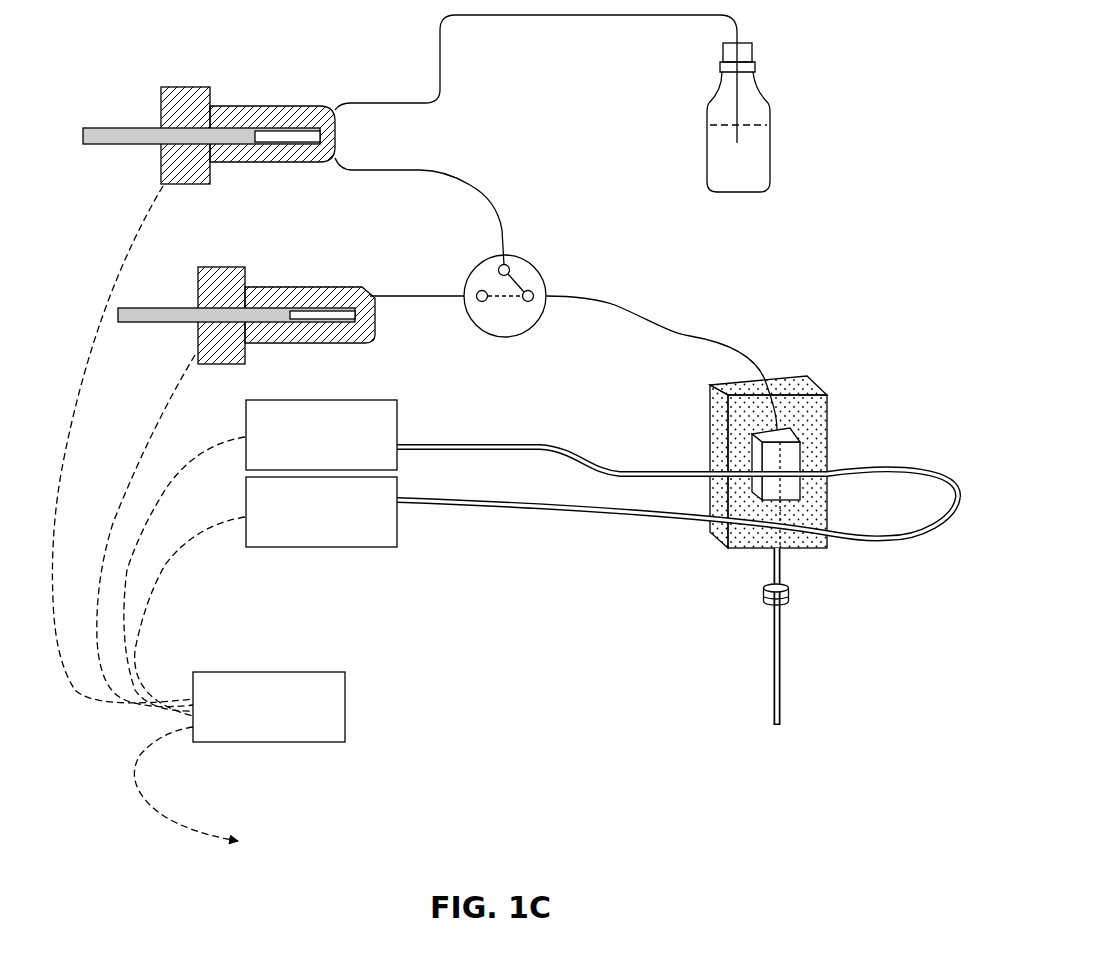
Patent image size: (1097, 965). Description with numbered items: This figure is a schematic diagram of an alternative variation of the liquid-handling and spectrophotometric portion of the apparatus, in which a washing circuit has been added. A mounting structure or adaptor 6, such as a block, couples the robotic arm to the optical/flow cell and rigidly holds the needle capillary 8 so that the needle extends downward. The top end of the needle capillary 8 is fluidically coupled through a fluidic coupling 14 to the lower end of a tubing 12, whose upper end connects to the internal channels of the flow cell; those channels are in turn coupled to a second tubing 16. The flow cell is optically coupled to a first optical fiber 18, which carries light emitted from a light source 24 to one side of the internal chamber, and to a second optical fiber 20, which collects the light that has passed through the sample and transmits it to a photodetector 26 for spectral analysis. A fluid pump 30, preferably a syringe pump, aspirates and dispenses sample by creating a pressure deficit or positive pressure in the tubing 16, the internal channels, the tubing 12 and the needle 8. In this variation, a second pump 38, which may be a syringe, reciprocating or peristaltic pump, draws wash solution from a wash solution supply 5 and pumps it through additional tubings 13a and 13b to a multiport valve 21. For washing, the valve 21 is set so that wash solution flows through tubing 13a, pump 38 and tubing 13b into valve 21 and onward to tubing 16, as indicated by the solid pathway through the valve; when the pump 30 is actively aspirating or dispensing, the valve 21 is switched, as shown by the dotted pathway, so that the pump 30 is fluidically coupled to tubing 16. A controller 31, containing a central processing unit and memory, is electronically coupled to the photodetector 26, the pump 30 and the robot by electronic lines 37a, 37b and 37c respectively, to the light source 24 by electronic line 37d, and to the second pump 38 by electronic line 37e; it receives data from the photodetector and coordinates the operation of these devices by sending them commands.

The wash solution supply 5 is at (768, 57).
The mounting structure or adaptor 6 is at (840, 390).
The needle capillary 8 is at (782, 673).
The tubing 12 is at (790, 557).
The tubing 13a is at (598, 18).
The tubing 13b is at (490, 198).
The fluidic coupling 14 is at (763, 597).
The second tubing 16 is at (617, 300).
The first optical fiber 18 is at (535, 448).
The second optical fiber 20 is at (518, 505).
The multiport valve 21 is at (537, 268).
The light source 24 is at (321, 435).
The photodetector 26 is at (321, 512).
The fluid pump 30 is at (357, 262).
The controller 31 is at (269, 707).
The electronic line 37a is at (153, 567).
The electronic line 37b is at (153, 430).
The electronic line 37c is at (163, 810).
The electronic line 37d is at (197, 457).
The electronic line 37e is at (115, 708).
The second pump 38 is at (290, 82).